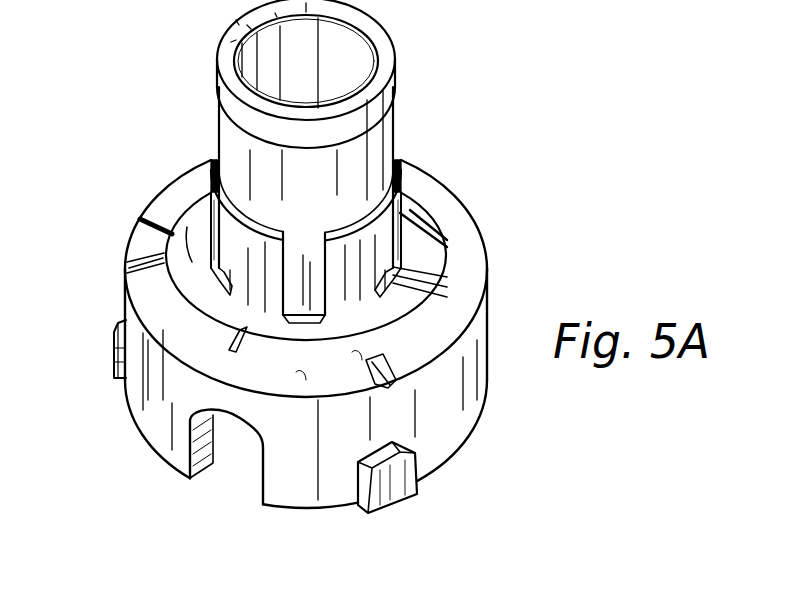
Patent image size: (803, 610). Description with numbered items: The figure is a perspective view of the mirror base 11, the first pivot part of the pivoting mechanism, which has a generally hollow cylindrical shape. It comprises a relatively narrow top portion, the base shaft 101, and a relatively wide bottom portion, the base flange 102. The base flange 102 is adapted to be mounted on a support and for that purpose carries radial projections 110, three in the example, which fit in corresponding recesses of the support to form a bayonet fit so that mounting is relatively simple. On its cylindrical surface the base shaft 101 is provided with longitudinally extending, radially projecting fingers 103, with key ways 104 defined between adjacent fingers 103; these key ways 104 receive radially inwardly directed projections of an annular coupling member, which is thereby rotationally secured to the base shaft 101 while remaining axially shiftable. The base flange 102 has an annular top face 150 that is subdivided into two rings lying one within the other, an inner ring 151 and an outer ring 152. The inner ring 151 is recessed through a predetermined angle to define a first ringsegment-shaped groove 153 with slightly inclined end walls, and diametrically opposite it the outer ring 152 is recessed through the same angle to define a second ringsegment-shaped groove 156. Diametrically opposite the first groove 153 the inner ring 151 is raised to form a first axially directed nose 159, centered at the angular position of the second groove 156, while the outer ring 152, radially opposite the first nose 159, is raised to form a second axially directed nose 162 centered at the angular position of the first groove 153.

The mirror base 11 is at (530, 138).
The base shaft 101 is at (240, 36).
The base flange 102 is at (455, 400).
The fingers 103 is at (190, 232).
The key ways 104 is at (306, 258).
The radial projections 110 is at (113, 358).
The annular top face 150 is at (264, 360).
The inner ring 151 is at (362, 360).
The outer ring 152 is at (302, 384).
The first ringsegment-shaped groove 153 is at (192, 258).
The second ringsegment-shaped groove 156 is at (467, 288).
The first axially directed nose 159 is at (432, 257).
The second axially directed nose 162 is at (147, 257).